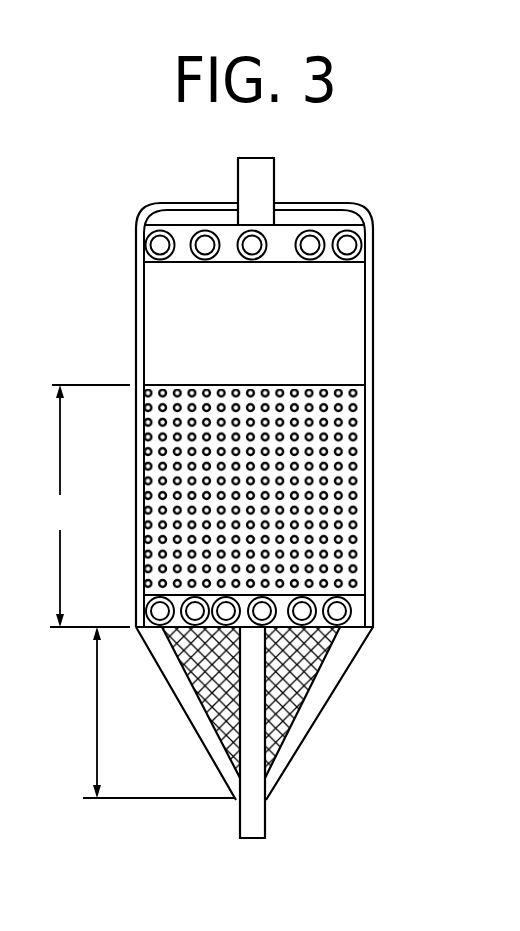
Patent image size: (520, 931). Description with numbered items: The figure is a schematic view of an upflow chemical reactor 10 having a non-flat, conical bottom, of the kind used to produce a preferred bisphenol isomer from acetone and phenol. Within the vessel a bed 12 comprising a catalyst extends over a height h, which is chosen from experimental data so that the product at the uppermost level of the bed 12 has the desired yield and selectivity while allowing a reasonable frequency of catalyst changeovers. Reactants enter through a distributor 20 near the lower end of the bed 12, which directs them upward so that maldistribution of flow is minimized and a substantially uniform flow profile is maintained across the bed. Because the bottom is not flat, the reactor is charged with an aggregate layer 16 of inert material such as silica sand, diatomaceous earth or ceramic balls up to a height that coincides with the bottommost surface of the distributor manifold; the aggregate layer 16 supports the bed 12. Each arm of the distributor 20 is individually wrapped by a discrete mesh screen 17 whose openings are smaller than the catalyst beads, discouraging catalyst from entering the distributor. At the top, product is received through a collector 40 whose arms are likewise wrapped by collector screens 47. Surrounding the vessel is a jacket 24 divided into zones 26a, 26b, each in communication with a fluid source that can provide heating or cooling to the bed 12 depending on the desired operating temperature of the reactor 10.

The reactor 10 is at (100, 226).
The bed 12 is at (353, 473).
The aggregate layer 16 is at (297, 698).
The screen 17 is at (350, 604).
The distributor 20 is at (340, 578).
The jacket 24 is at (384, 309).
The zone 26a is at (373, 370).
The zone 26b is at (135, 518).
The collector 40 is at (322, 222).
The collector screen 47 is at (237, 263).